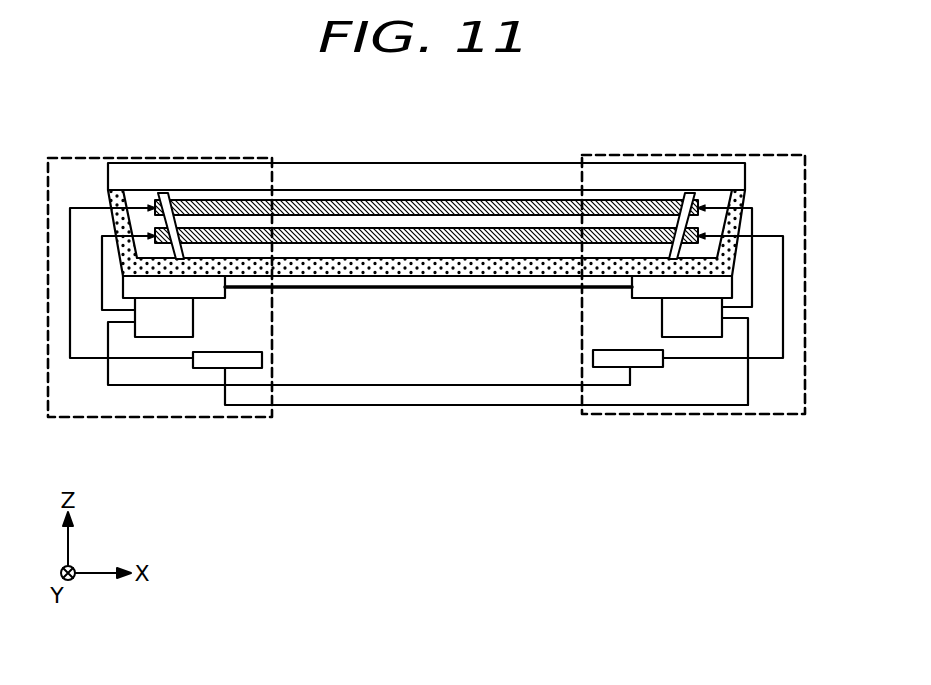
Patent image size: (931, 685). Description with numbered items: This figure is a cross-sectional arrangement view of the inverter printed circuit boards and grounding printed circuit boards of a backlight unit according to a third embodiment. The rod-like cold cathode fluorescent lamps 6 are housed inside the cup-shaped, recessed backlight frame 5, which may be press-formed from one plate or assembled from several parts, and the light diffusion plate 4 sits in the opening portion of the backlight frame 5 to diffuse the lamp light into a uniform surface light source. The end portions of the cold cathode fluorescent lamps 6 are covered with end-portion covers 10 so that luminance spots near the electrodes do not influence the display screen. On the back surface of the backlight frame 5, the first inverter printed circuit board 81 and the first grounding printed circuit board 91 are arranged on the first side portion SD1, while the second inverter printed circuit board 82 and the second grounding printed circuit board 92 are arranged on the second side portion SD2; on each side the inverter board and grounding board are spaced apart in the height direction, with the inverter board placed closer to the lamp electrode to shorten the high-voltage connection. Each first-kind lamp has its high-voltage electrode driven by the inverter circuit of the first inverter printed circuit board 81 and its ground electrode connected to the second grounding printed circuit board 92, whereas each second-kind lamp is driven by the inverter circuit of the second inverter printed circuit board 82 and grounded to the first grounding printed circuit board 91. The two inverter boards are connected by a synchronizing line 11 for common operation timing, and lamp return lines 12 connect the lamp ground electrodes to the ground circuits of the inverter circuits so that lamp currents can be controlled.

The light diffusion plate 4 is at (547, 162).
The backlight frame 5 is at (747, 197).
The cold cathode fluorescent lamp 6 is at (409, 204).
The end-portion cover 10 is at (143, 190).
The synchronizing line 11 is at (350, 290).
The lamp return line 12 is at (452, 405).
The first inverter printed circuit board 81 is at (217, 300).
The second inverter printed circuit board 82 is at (643, 298).
The first grounding printed circuit board 91 is at (203, 368).
The second grounding printed circuit board 92 is at (648, 367).
The first side portion SD1 is at (250, 417).
The second side portion SD2 is at (605, 414).